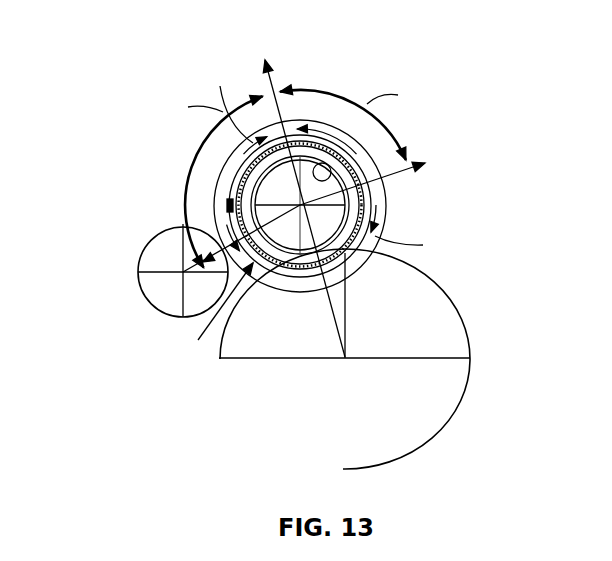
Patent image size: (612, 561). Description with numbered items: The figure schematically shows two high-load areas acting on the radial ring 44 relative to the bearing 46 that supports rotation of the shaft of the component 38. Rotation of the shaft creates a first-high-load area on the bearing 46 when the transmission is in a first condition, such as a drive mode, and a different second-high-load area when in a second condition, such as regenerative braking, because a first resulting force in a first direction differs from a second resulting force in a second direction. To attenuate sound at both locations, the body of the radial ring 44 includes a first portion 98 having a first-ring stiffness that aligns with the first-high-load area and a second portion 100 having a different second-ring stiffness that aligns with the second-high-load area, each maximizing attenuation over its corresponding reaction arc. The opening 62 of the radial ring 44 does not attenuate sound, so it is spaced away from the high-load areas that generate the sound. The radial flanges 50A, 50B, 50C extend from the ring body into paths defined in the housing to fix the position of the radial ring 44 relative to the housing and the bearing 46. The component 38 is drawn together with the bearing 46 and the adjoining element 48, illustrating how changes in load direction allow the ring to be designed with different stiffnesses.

The second portion 100 is at (428, 63).
The first portion 98 is at (180, 184).
The radial ring 44 is at (229, 168).
The radial flange 50A is at (122, 209).
The radial flange 50B is at (122, 209).
The radial flange 50C is at (226, 206).
The component 38 is at (275, 273).
The planet gear 48 is at (310, 155).
The bearing 46 is at (347, 285).
The opening 62 is at (282, 272).